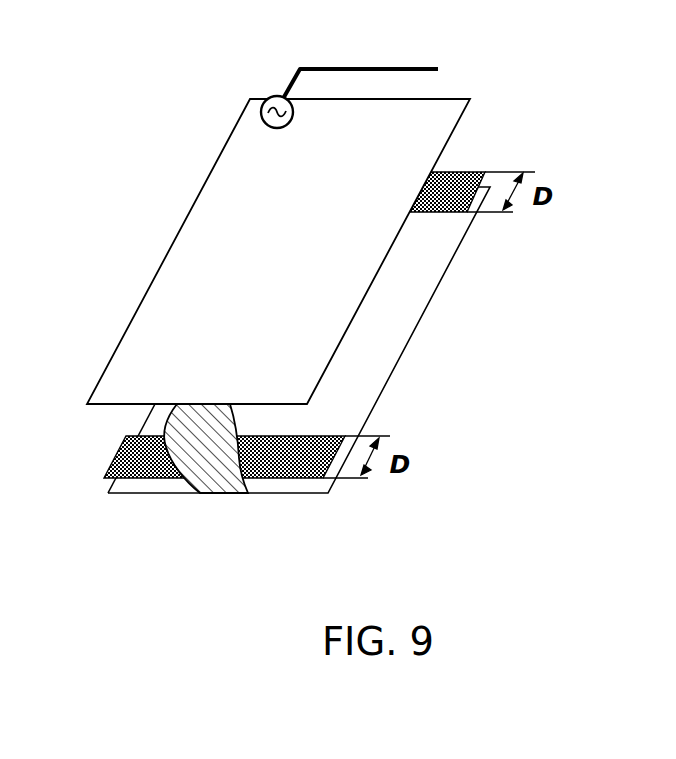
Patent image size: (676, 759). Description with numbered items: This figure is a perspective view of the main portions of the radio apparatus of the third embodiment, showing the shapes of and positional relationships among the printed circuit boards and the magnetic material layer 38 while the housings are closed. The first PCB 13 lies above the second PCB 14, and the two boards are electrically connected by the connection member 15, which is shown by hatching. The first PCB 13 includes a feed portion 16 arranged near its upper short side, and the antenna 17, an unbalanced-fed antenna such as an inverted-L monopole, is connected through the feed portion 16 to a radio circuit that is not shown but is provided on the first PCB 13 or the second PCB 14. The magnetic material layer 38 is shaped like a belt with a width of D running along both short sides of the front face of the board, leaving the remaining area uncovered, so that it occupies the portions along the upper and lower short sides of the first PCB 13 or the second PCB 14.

The first printed circuit board 13 is at (172, 243).
The second printed circuit board 14 is at (410, 341).
The connection member 15 is at (210, 493).
The feed portion 16 is at (262, 107).
The antenna 17 is at (438, 68).
The magnetic material layer 38 is at (460, 172).